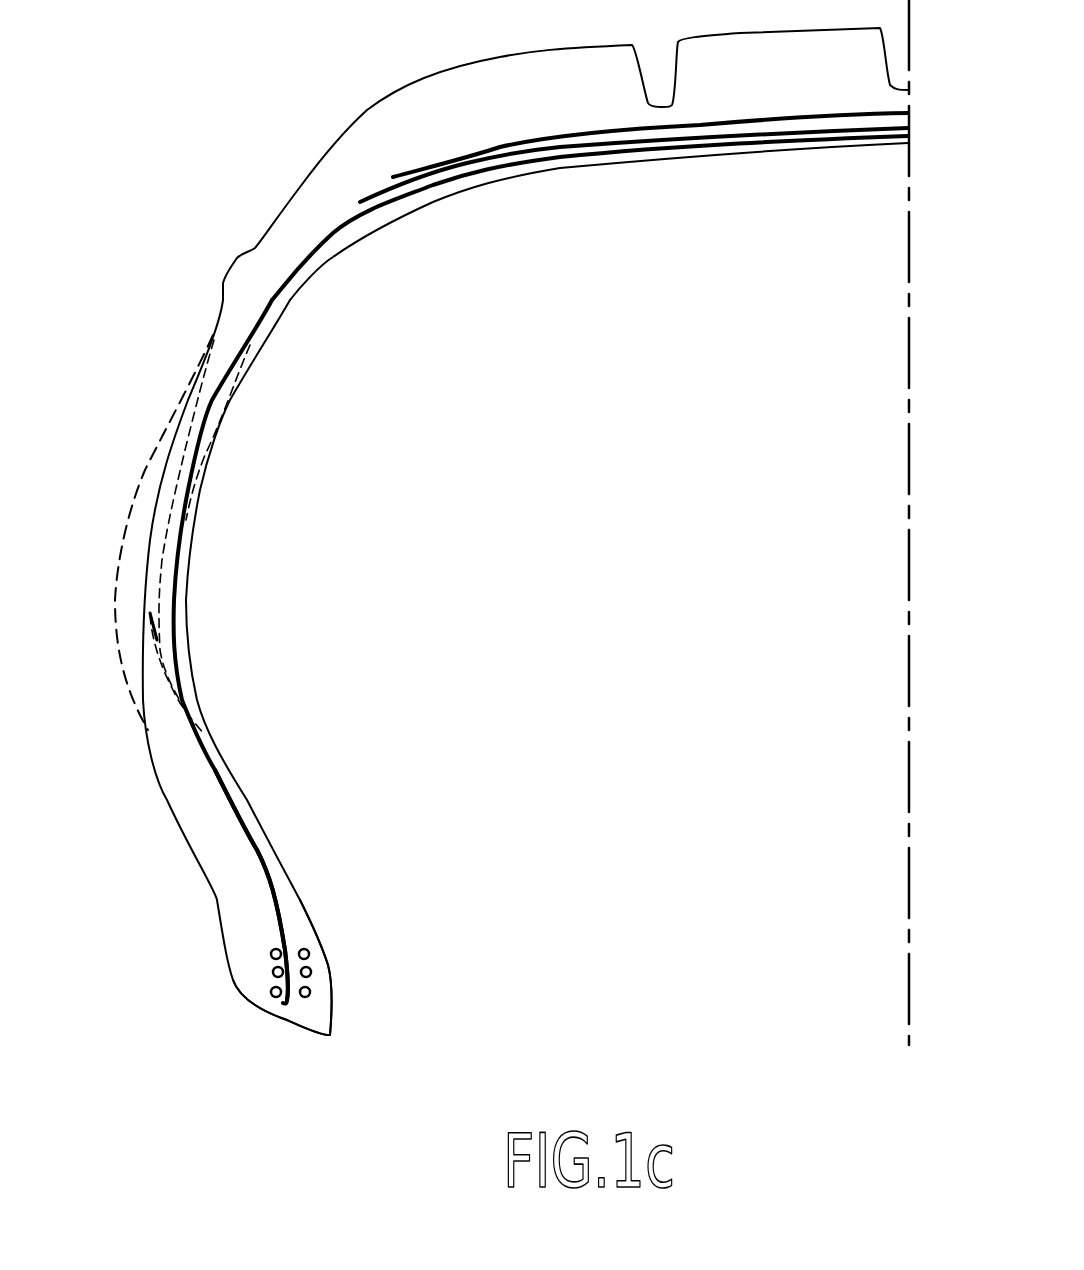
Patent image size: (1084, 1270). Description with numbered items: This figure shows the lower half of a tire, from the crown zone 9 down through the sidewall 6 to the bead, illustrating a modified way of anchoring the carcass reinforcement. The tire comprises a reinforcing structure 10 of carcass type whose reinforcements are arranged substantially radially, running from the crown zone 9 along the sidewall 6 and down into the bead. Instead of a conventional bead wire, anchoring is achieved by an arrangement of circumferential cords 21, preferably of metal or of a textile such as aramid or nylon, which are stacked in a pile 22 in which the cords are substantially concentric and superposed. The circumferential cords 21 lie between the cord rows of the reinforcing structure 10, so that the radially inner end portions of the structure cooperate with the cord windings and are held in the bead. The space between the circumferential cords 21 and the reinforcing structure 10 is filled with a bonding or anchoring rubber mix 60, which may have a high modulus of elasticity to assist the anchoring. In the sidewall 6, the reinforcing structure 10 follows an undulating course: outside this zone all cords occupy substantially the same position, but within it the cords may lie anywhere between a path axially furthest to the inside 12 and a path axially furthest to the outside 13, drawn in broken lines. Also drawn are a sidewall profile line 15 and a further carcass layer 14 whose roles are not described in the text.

The crown zone 9 is at (609, 100).
The sidewall 15 is at (150, 472).
The carcass ply 14 is at (200, 436).
The reinforcement structure path axially furthest to the inside 12 is at (182, 493).
The sidewall 6 is at (172, 538).
The reinforcement structure path axially furthest to the outside 13 is at (150, 613).
The reinforcing structure 10 is at (253, 853).
The circumferential cords 21 is at (302, 953).
The bonding or anchoring rubber mix 60 is at (287, 963).
The pile 22 is at (300, 1007).